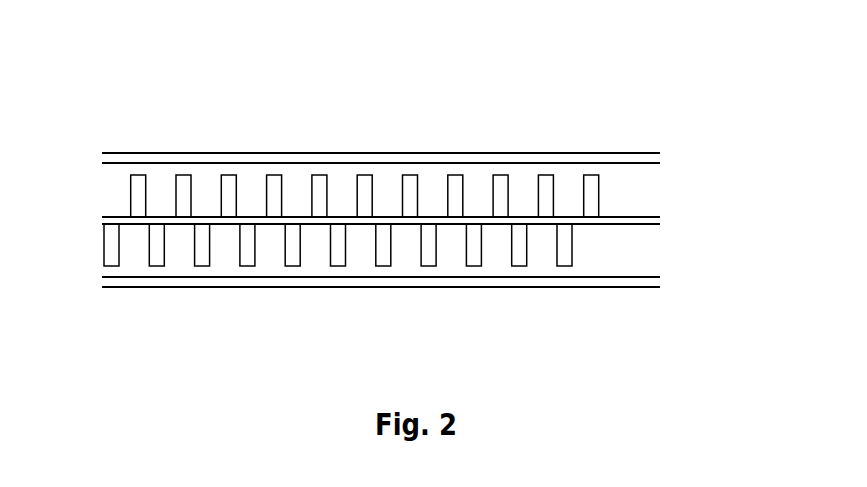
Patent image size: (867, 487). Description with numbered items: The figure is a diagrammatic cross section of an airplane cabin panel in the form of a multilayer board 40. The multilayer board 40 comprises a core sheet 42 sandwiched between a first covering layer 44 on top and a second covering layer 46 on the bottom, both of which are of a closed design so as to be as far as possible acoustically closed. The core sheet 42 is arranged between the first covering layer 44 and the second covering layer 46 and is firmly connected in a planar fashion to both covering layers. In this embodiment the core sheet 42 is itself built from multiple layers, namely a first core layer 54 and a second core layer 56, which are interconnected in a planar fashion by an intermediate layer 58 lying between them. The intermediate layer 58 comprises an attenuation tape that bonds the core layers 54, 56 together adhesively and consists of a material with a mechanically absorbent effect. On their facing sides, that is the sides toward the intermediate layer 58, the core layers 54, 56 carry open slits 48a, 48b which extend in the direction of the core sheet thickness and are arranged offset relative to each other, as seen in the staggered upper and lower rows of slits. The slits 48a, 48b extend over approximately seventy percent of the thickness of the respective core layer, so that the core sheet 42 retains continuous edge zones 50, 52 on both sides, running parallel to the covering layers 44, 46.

The multilayer board 40 is at (401, 208).
The core sheet 42 is at (401, 222).
The first covering layer 44 is at (653, 137).
The second covering layer 46 is at (646, 304).
The open slits 48a is at (183, 180).
The open slits 48b is at (160, 257).
The continuous edge zone 50 is at (293, 177).
The continuous edge zone 52 is at (322, 267).
The first core layer 54 is at (388, 185).
The second core layer 56 is at (273, 248).
The intermediate layer 58 is at (114, 216).